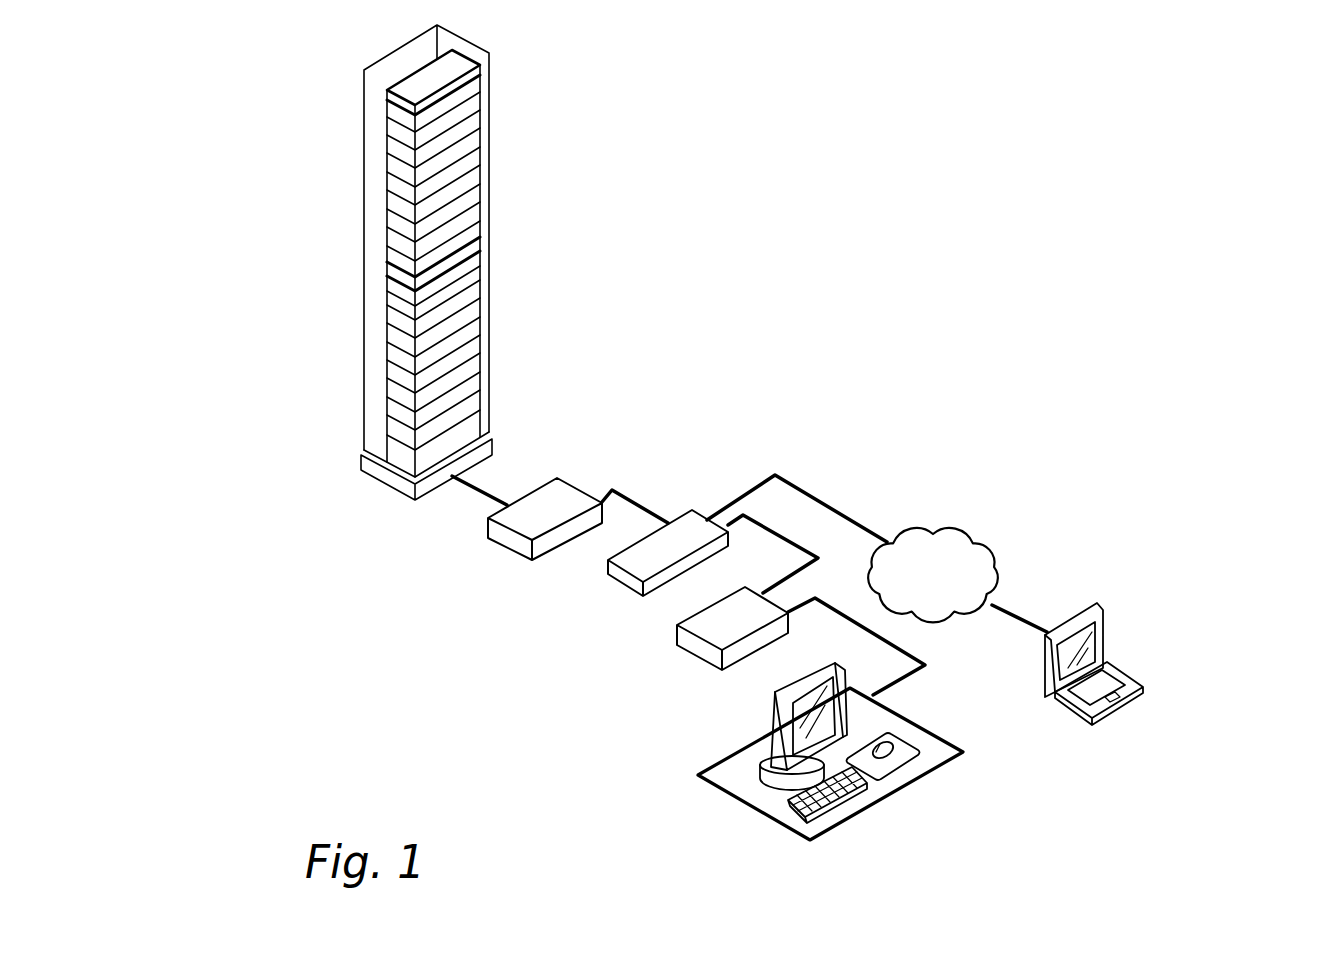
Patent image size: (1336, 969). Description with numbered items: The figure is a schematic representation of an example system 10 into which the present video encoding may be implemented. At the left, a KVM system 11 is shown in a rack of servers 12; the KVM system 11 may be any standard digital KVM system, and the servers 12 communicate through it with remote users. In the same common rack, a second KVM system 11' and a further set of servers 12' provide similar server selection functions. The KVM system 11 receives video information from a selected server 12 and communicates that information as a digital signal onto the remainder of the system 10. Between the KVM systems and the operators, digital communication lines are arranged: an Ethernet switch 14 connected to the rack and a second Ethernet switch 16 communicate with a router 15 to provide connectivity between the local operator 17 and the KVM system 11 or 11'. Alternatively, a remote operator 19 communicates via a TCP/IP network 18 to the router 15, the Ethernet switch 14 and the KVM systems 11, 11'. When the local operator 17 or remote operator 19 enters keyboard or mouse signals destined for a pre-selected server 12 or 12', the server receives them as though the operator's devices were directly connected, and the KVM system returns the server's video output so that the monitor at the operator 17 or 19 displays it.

The system 10 is at (840, 312).
The KVM system 11 is at (323, 72).
The servers 12 is at (290, 176).
The KVM system 11' is at (321, 267).
The servers 12' is at (287, 358).
The Ethernet switch 14 is at (415, 537).
The router 15 is at (635, 573).
The Ethernet switch 16 is at (614, 648).
The local operator 17 is at (876, 772).
The TCP/IP network 18 is at (953, 604).
The remote operator 19 is at (1175, 693).